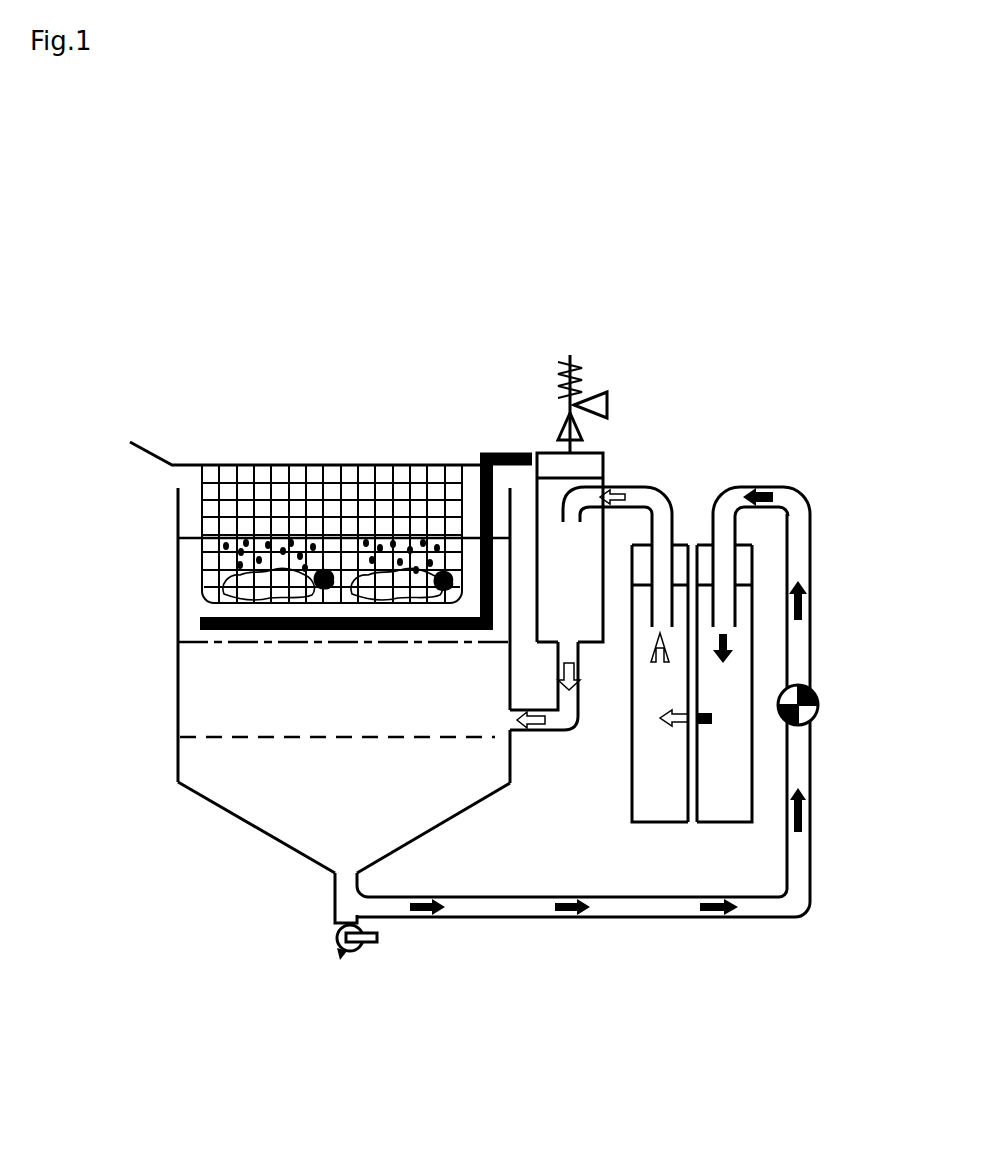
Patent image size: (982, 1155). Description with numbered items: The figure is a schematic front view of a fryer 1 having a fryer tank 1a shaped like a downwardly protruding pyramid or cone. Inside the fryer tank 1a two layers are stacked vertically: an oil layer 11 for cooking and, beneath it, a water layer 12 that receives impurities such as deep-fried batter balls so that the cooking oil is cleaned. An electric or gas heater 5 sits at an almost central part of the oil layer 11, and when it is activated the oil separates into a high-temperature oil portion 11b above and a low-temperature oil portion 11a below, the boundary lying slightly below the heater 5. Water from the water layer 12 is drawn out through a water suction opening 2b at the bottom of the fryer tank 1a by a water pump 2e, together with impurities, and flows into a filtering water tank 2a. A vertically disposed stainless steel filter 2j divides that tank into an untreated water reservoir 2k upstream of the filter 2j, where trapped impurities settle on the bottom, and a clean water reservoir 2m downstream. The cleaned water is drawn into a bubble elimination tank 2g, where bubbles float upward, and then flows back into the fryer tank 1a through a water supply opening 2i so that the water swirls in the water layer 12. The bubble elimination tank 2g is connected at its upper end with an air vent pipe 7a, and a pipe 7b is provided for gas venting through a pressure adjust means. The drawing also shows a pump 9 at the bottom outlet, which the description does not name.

The fryer 1 is at (361, 362).
The fryer tank 1a is at (174, 539).
The oil layer 11 is at (72, 568).
The low-temperature oil portion 11a is at (188, 660).
The high-temperature oil portion 11b is at (186, 602).
The heater 5 is at (290, 631).
The water layer 12 is at (178, 780).
The water suction opening 2b is at (345, 868).
The drain pump 9 is at (330, 942).
The water supply opening 2i is at (512, 718).
The air vent pipe 7a is at (597, 648).
The bubble elimination tank 2g is at (552, 450).
The pipe 7b is at (598, 394).
The filtering water tank 2a is at (690, 526).
The clean water reservoir 2m is at (648, 805).
The filter 2j is at (697, 798).
The untreated water reservoir 2k is at (735, 805).
The water pump 2e is at (819, 690).